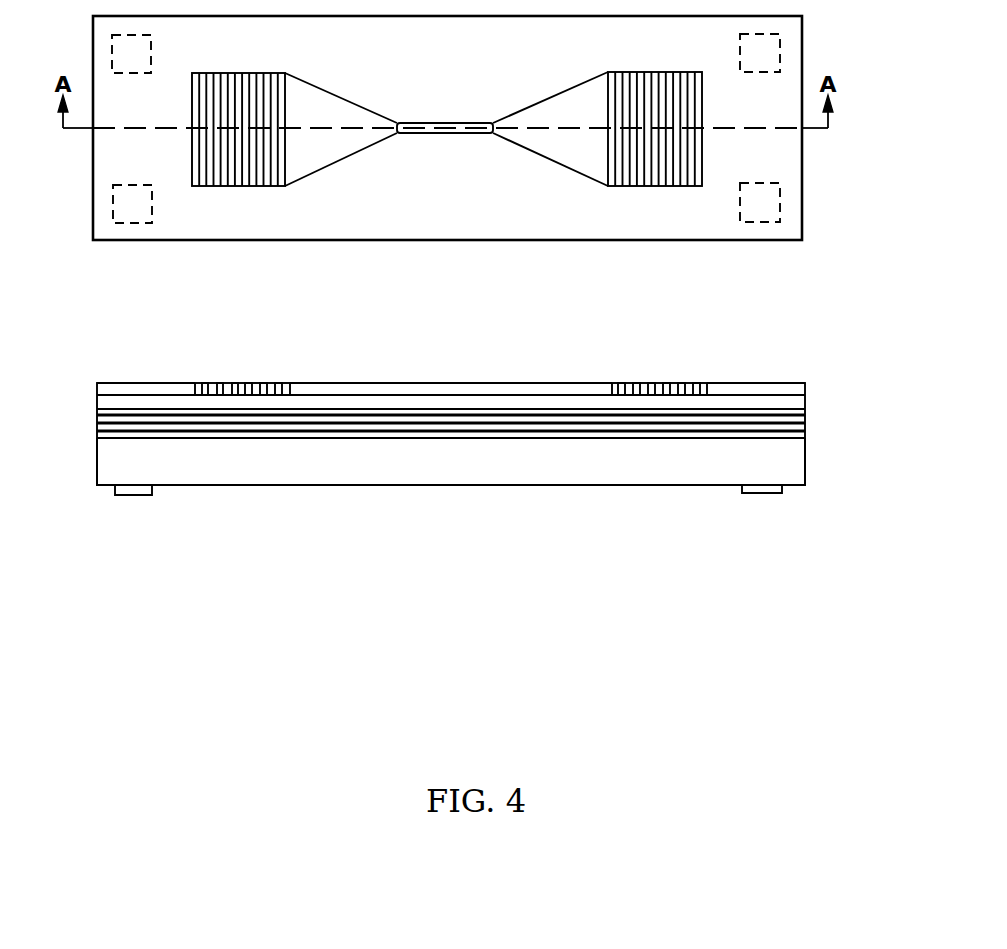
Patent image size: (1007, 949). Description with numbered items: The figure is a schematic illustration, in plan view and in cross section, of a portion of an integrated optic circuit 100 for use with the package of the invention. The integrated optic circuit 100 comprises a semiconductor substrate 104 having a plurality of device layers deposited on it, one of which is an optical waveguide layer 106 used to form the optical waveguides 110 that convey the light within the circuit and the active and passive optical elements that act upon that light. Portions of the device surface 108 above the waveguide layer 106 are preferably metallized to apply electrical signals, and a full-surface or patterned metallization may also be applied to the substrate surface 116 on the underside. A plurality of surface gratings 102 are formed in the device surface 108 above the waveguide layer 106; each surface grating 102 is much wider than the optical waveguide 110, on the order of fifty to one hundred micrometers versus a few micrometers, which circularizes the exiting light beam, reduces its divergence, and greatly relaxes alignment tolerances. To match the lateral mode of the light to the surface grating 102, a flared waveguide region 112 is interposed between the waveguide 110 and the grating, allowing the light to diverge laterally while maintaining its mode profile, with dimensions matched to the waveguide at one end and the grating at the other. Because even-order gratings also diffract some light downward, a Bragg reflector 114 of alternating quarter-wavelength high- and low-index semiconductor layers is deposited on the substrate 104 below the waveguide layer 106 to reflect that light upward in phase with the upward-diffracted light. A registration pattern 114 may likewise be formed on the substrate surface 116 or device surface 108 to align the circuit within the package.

The integrated optic circuit 100 is at (790, 538).
The surface grating 102 is at (232, 186).
The semiconductor substrate 104 is at (807, 467).
The optical waveguide layer 106 is at (807, 402).
The device surface 108 is at (398, 383).
The optical waveguide 110 is at (427, 122).
The flared waveguide region 112 is at (333, 165).
The Bragg reflector 114 is at (132, 185).
The substrate surface 116 is at (400, 487).